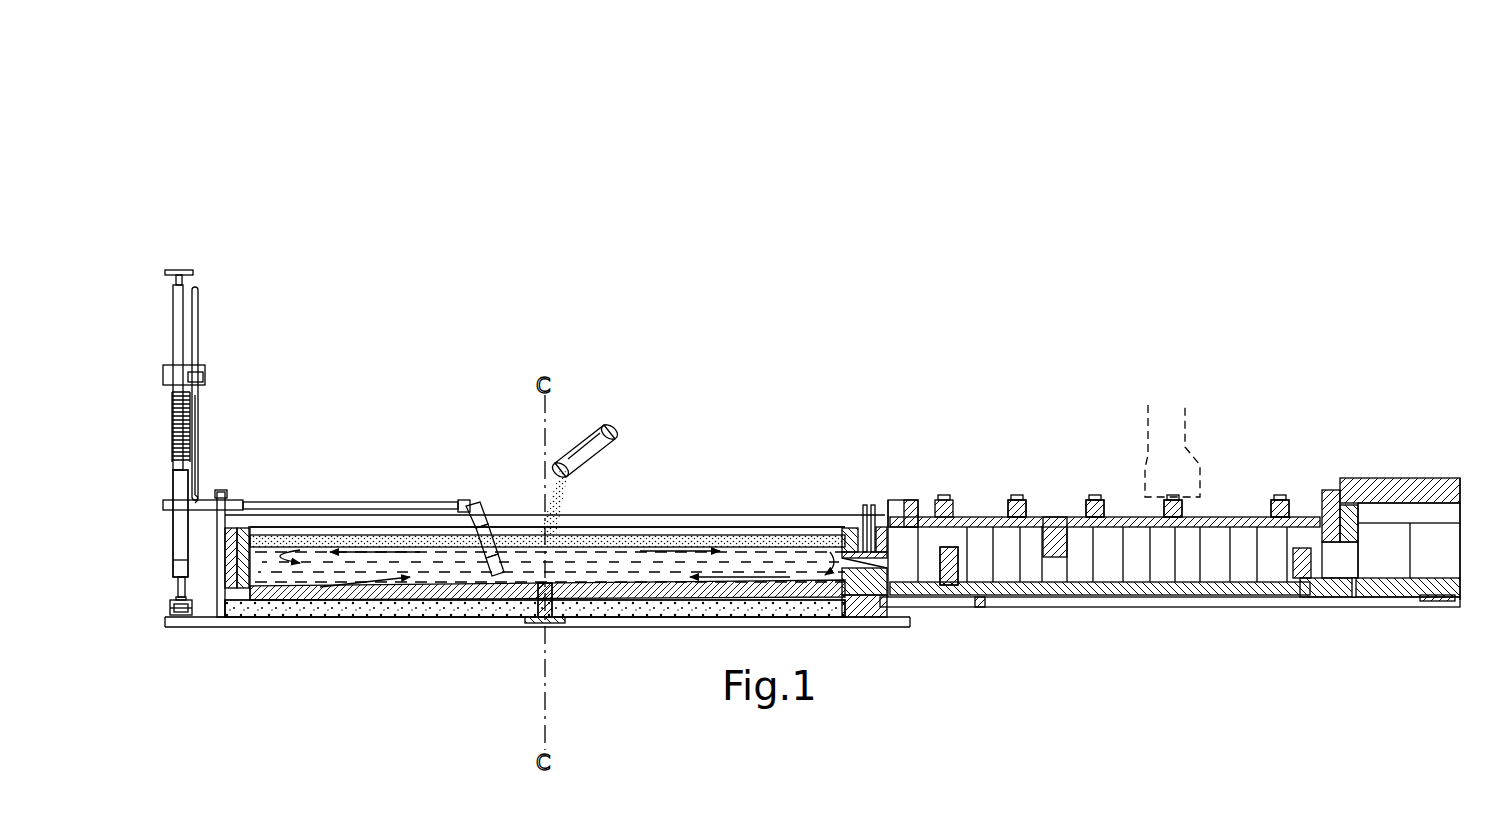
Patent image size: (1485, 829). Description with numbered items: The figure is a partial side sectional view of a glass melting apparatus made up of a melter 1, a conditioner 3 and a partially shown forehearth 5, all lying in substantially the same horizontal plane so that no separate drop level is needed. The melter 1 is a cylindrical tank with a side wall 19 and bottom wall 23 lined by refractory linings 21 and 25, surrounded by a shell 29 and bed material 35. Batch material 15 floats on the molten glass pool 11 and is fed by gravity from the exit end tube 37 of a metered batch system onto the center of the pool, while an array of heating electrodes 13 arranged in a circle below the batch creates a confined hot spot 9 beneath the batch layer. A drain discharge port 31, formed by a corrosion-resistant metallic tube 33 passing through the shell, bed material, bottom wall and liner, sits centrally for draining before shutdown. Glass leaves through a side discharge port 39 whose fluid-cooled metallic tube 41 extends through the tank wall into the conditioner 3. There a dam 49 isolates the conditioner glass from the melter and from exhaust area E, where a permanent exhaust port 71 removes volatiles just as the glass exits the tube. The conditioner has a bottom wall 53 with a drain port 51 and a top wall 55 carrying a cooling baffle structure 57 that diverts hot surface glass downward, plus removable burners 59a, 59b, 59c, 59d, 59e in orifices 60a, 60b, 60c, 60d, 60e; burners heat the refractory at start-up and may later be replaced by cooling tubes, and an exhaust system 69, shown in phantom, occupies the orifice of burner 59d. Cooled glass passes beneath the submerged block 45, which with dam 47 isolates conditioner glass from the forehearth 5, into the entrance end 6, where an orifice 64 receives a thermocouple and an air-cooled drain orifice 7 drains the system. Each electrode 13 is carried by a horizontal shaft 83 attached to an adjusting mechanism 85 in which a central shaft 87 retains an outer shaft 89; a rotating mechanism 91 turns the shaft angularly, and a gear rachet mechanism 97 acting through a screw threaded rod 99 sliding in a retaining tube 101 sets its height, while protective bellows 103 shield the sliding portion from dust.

The melter 1 is at (622, 462).
The conditioner 3 is at (1062, 475).
The forehearth 5 is at (1378, 460).
The entrance end of forehearth 6 is at (1340, 561).
The drain orifice 7 is at (1433, 603).
The hot spot 9 is at (566, 555).
The molten glass pool 11 is at (705, 560).
The heating electrode 13 is at (498, 525).
The batch material 15 is at (549, 482).
The side wall 19 is at (230, 527).
The refractory lining 21 is at (245, 527).
The bottom wall 23 is at (266, 605).
The refractory lining 25 is at (296, 600).
The shell 29 is at (220, 620).
The drain discharge port 31 is at (560, 630).
The metallic tube 33 is at (530, 628).
The bed material 35 is at (715, 605).
The exit end tube 37 is at (593, 435).
The side discharge port 39 is at (850, 545).
The metallic tube 41 is at (872, 527).
The submerged block (dam) 45 is at (1331, 490).
The dam 47 is at (1303, 580).
The dam 49 is at (960, 562).
The drain port 51 is at (980, 610).
The bottom wall 53 is at (1088, 600).
The top wall 55 is at (1222, 517).
The cooling baffle structure 57 is at (1056, 517).
The removable burner 59a is at (944, 497).
The removable burner 59b is at (1017, 497).
The removable burner 59c is at (1095, 497).
The removable burner 59d is at (1178, 498).
The removable burner 59e is at (1280, 497).
The orifice 60a is at (938, 585).
The orifice 60b is at (1010, 520).
The orifice 60c is at (1095, 520).
The orifice 60d is at (1172, 520).
The orifice 60e is at (1277, 520).
The thermocouple orifice 64 is at (1354, 600).
The exhaust system 69 is at (1186, 447).
The permanent exhaust port 71 is at (890, 510).
The horizontal shaft 83 is at (391, 500).
The adjusting mechanism 85 is at (212, 444).
The central shaft 87 is at (178, 283).
The outer shaft 89 is at (172, 565).
The rotating mechanism 91 is at (163, 604).
The gear rachet mechanism 97 is at (214, 368).
The screw threaded rod 99 is at (198, 413).
The retaining tube 101 is at (199, 310).
The protective bellows 103 is at (170, 446).
The exhaust area E is at (924, 553).